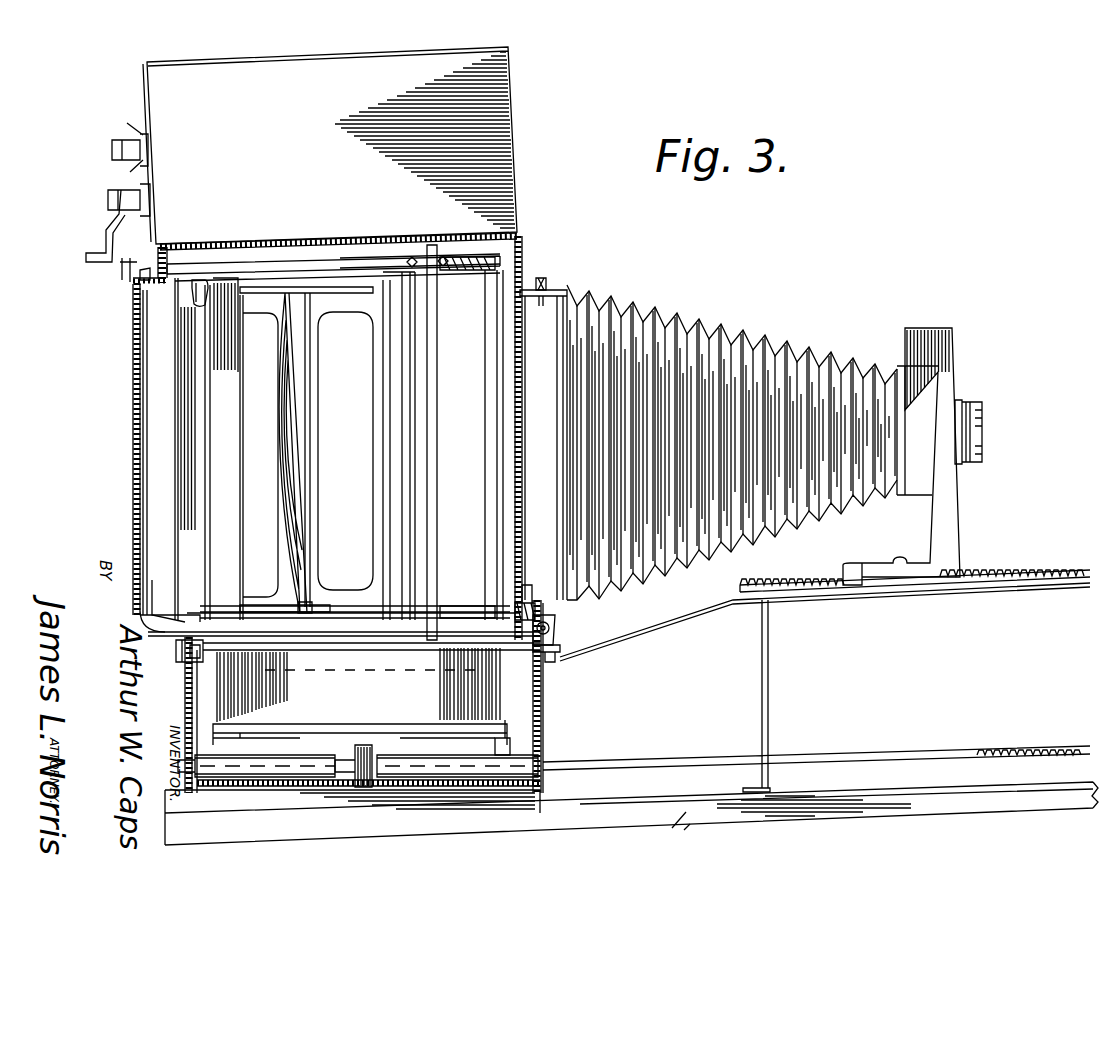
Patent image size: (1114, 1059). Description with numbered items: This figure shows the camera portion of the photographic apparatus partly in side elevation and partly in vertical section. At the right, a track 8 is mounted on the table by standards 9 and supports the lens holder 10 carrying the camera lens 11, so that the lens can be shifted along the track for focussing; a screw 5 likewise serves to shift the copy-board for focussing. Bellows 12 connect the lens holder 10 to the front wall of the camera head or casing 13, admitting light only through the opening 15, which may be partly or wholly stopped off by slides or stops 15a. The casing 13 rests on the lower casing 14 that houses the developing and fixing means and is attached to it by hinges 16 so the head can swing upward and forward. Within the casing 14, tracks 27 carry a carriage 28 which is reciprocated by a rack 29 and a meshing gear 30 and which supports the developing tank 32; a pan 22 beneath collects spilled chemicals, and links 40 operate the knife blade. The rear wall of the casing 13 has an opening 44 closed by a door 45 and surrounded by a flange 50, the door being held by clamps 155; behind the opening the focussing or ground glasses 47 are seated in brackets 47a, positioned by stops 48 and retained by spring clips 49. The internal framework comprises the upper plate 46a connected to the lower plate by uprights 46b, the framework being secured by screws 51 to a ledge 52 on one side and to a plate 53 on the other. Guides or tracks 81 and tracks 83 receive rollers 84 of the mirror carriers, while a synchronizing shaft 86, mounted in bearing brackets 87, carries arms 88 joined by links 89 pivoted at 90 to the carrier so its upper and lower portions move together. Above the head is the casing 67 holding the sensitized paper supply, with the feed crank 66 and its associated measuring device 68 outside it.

The screw 5 is at (792, 757).
The track 8 is at (1020, 580).
The standards 9 is at (767, 687).
The lens holder 10 is at (943, 390).
The camera lens 11 is at (975, 435).
The bellows 12 is at (760, 362).
The camera head or casing 13 is at (520, 262).
The casing 14 is at (540, 715).
The opening 15 is at (523, 373).
The slides or stops 15a is at (547, 280).
The hinges 16 is at (553, 625).
The pan 22 is at (222, 742).
The tracks 27 is at (505, 725).
The carriage 28 is at (265, 752).
The rack 29 is at (362, 745).
The gear 30 is at (457, 752).
The developing tank 32 is at (360, 715).
The links 40 is at (212, 650).
The opening 44 is at (162, 453).
The door 45 is at (150, 498).
The upper plate 46a is at (340, 260).
The uprights 46b is at (305, 620).
The focussing screen or ground glasses 47 is at (197, 517).
The brackets 47a is at (175, 620).
The stops 48 is at (222, 283).
The spring clips 49 is at (197, 290).
The flange 50 is at (168, 583).
The screws 51 is at (540, 652).
The ledge 52 is at (545, 603).
The plate 53 is at (178, 655).
The crank 66 is at (119, 208).
The casing 67 is at (330, 145).
The measuring device 68 is at (138, 216).
The guides or tracks 81 is at (243, 282).
The guides or tracks 83 is at (467, 270).
The rollers or projections 84 is at (393, 637).
The shaft 86 is at (438, 408).
The bearing brackets 87 is at (440, 277).
The arms 88 is at (363, 290).
The links 89 is at (292, 278).
The pivotal connection 90 is at (292, 270).
The clamps 155 is at (120, 270).